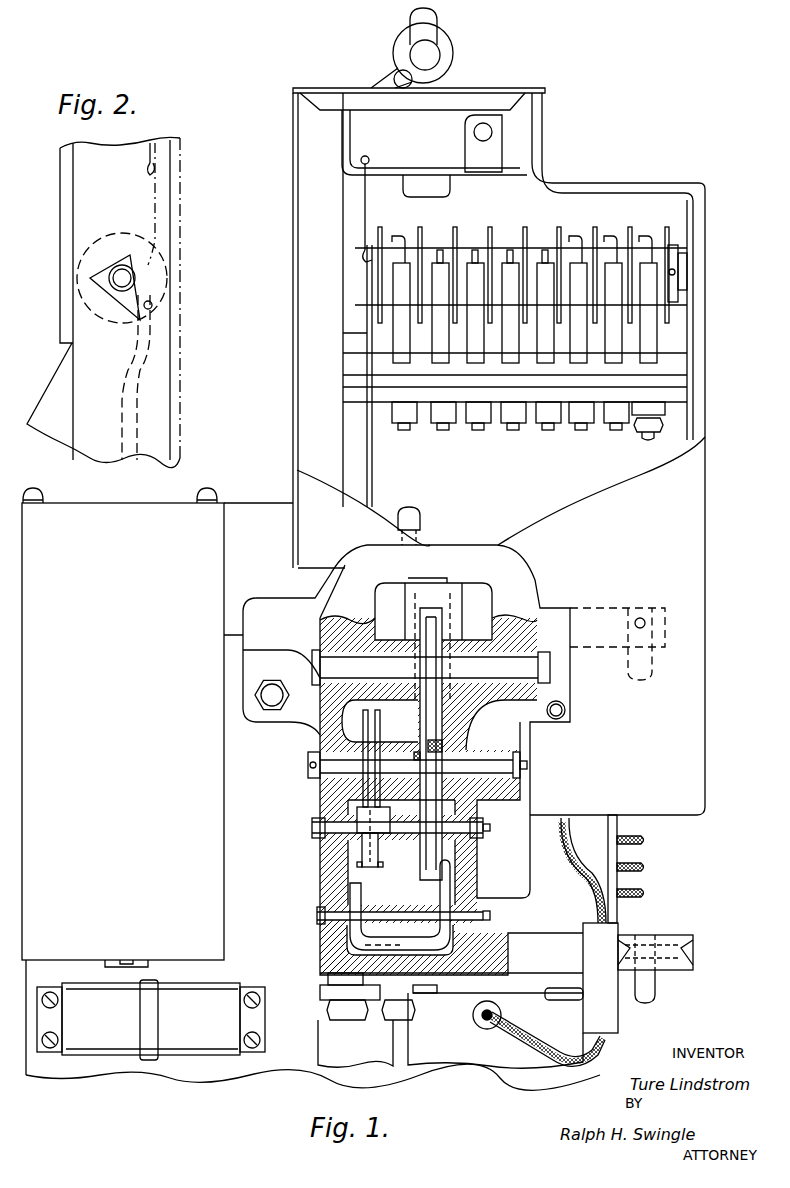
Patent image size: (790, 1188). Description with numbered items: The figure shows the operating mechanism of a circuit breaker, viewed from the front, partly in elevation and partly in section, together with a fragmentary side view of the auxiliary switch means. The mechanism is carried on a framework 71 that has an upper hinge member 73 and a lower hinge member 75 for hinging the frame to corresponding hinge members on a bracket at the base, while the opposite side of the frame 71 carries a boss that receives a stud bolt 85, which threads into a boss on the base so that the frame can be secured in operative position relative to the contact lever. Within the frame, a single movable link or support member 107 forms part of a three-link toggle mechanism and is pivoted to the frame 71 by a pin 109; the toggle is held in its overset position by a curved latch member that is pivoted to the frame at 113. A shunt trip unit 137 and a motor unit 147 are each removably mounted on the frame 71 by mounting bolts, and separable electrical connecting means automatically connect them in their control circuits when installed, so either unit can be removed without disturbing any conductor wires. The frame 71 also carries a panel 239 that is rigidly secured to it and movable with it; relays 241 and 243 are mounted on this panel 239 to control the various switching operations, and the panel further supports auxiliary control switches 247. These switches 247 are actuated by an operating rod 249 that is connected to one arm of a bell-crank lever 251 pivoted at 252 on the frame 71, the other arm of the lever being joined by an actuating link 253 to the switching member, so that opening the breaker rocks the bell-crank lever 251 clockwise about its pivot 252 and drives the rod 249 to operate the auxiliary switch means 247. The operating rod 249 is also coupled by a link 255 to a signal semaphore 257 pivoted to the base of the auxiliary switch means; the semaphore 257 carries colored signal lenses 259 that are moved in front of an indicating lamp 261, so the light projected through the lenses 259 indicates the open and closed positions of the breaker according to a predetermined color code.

In FIG. 1, the framework 71 is at (517, 574).
In FIG. 1, the upper hinge member 73 is at (652, 660).
In FIG. 1, the lower hinge member 75 is at (656, 991).
In FIG. 1, the stud bolt 85 is at (255, 695).
In FIG. 1, the movable link or support member 107 is at (440, 725).
In FIG. 1, the pin 109 is at (546, 672).
In FIG. 1, the pivot of latch member 113 is at (527, 765).
In FIG. 1, the shunt trip unit 137 is at (367, 1050).
In FIG. 1, the motor unit 147 is at (456, 1052).
In FIG. 1, the panel 239 is at (250, 508).
In FIG. 1, the relay 241 is at (103, 516).
In FIG. 1, the relay 243 is at (95, 995).
In FIG. 2, the auxiliary control switches 247 is at (222, 303).
In FIG. 1, the auxiliary control switches 247 is at (750, 308).
In FIG. 2, the operating rod 249 is at (138, 417).
In FIG. 1, the operating rod 249 is at (365, 336).
In FIG. 1, the bell-crank lever 251 is at (323, 850).
In FIG. 1, the pivot of bell-crank lever 252 is at (484, 828).
In FIG. 1, the actuating link 253 is at (381, 723).
In FIG. 2, the link 255 is at (153, 206).
In FIG. 1, the link 255 is at (366, 213).
In FIG. 2, the signal semaphore 257 is at (153, 148).
In FIG. 1, the signal semaphore 257 is at (443, 128).
In FIG. 1, the colored signal lenses 259 is at (417, 80).
In FIG. 1, the indicating lamp 261 is at (437, 22).